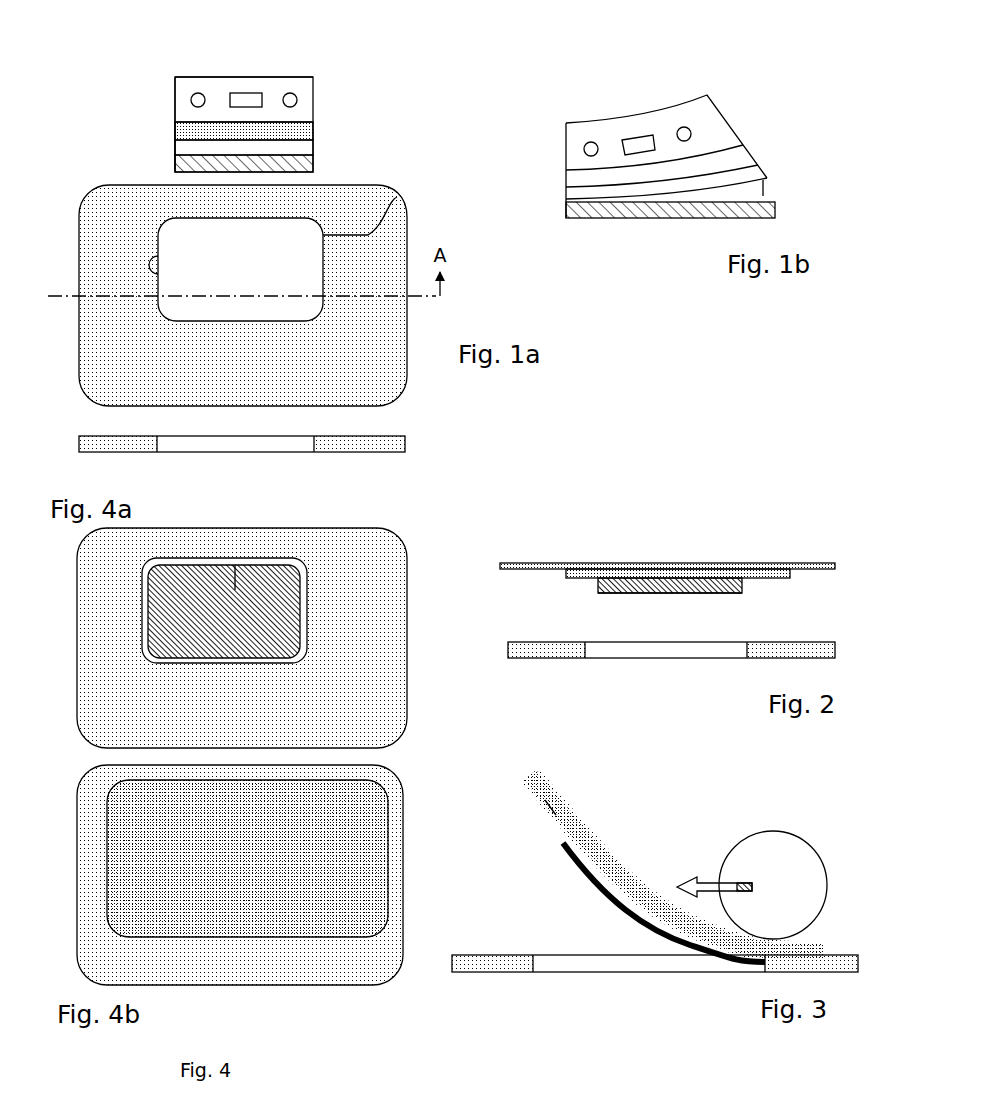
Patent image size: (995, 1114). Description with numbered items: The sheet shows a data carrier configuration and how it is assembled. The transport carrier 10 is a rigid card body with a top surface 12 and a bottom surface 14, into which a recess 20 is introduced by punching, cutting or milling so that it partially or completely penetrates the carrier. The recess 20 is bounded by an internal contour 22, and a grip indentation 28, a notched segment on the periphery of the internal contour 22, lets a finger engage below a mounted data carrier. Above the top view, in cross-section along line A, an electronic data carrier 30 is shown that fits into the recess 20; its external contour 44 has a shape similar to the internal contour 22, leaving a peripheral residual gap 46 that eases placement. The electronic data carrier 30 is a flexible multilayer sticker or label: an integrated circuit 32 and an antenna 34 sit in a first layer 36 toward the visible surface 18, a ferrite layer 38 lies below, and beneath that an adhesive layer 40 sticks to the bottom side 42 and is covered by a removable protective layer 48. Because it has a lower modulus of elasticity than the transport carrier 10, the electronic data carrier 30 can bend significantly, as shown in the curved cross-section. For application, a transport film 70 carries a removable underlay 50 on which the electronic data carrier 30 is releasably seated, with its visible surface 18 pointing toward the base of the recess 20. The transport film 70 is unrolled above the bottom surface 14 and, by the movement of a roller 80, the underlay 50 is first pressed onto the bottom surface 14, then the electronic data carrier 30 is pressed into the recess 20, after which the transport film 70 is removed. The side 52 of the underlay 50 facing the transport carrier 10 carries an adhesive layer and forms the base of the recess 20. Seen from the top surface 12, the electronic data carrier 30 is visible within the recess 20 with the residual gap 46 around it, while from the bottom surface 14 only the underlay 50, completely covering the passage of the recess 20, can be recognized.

In FIG. 1A, the transport carrier 10 is at (243, 295).
In FIG. 2, the transport carrier 10 is at (836, 651).
In FIG. 3, the transport carrier 10 is at (858, 960).
In FIG. 4A, the transport carrier 10 is at (242, 638).
In FIG. 4B, the transport carrier 10 is at (240, 875).
In FIG. 1A, the top surface 12 is at (264, 439).
In FIG. 1A, the bottom surface 14 is at (381, 459).
In FIG. 3, the bottom surface 14 is at (497, 955).
In FIG. 1A, the visible surface 18 is at (253, 65).
In FIG. 2, the visible surface 18 is at (680, 612).
In FIG. 1A, the recess 20 is at (240, 269).
In FIG. 1A, the internal contour 22 is at (395, 200).
In FIG. 4A, the internal contour 22 is at (307, 615).
In FIG. 1A, the grip indentation 28 is at (150, 262).
In FIG. 1A, the electronic data carrier 30 is at (355, 80).
In FIG. 1B, the electronic data carrier 30 is at (748, 122).
In FIG. 2, the electronic data carrier 30 is at (635, 600).
In FIG. 3, the electronic data carrier 30 is at (597, 887).
In FIG. 1A, the integrated circuit 32 is at (242, 100).
In FIG. 1A, the antenna 34 is at (188, 100).
In FIG. 1A, the first layer 36 is at (310, 95).
In FIG. 1A, the ferrite layer 38 is at (313, 131).
In FIG. 1A, the adhesive layer 40 is at (313, 148).
In FIG. 1B, the bottom side 42 is at (765, 183).
In FIG. 1A, the external contour 44 is at (172, 112).
In FIG. 4A, the external contour 44 is at (307, 585).
In FIG. 4A, the residual gap 46 is at (235, 556).
In FIG. 1A, the protective layer 48 is at (313, 162).
In FIG. 1B, the protective layer 48 is at (776, 210).
In FIG. 2, the underlay 50 is at (586, 575).
In FIG. 3, the underlay 50 is at (540, 800).
In FIG. 4B, the underlay 50 is at (358, 812).
In FIG. 3, the side of the underlay 52 is at (557, 818).
In FIG. 2, the transport film 70 is at (770, 563).
In FIG. 3, the transport film 70 is at (527, 770).
In FIG. 3, the roller 80 is at (775, 832).